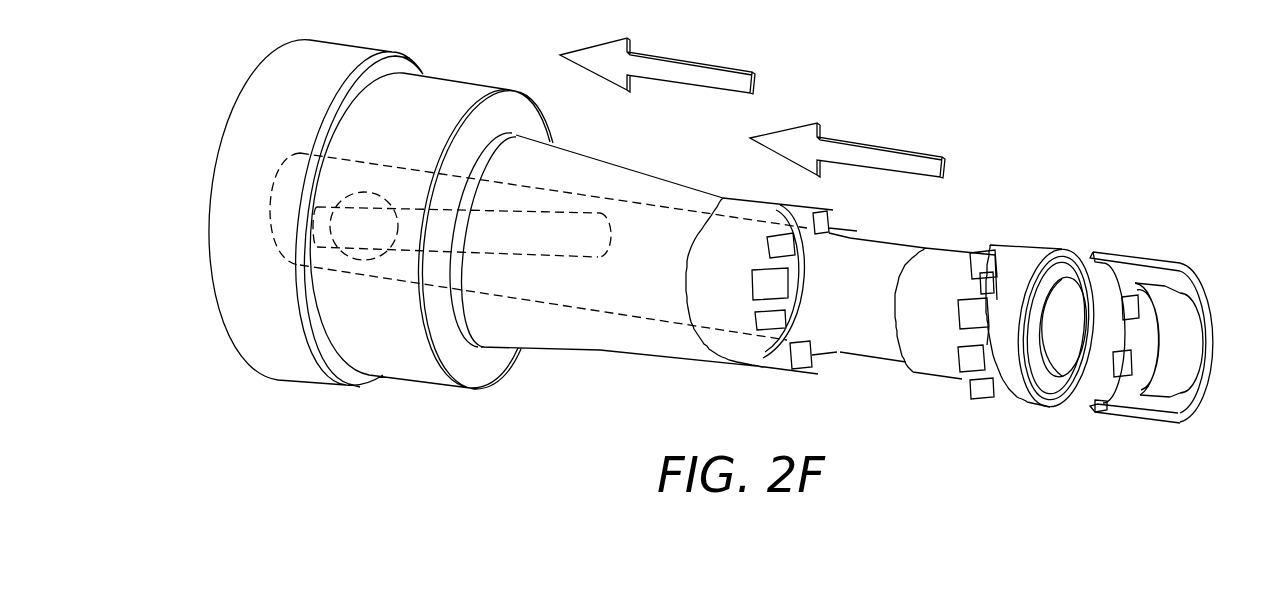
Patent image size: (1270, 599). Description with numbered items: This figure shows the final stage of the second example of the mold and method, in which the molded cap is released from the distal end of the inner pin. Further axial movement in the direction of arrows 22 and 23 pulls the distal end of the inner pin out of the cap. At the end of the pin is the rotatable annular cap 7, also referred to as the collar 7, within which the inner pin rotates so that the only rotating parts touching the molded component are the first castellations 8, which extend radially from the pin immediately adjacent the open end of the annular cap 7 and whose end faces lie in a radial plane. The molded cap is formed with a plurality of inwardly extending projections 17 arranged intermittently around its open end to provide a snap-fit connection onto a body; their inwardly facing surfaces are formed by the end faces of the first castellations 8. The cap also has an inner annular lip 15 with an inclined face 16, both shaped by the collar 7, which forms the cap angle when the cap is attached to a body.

The rotatable annular cap 7 is at (1033, 253).
The first castellations 8 is at (990, 208).
The inner annular lip 15 is at (1160, 403).
The inclined face 16 is at (1167, 363).
The inwardly extending projections 17 is at (1128, 309).
The arrow 22 is at (880, 155).
The arrow 23 is at (693, 72).